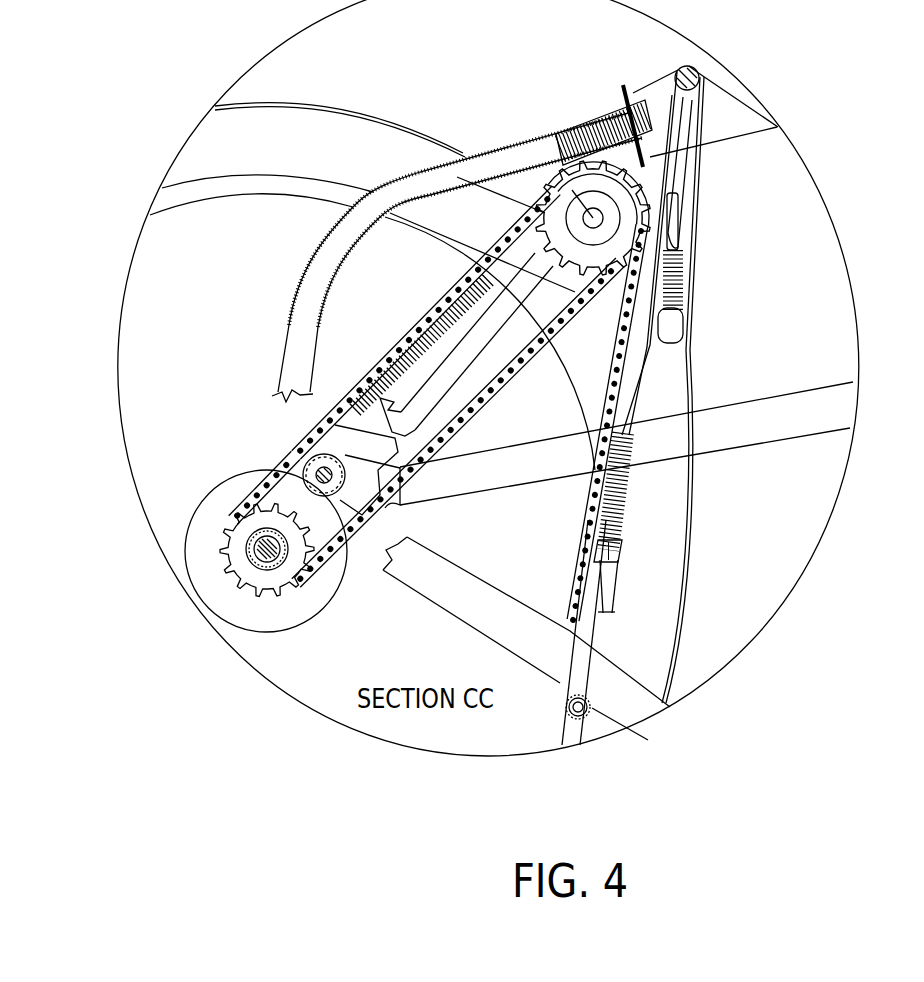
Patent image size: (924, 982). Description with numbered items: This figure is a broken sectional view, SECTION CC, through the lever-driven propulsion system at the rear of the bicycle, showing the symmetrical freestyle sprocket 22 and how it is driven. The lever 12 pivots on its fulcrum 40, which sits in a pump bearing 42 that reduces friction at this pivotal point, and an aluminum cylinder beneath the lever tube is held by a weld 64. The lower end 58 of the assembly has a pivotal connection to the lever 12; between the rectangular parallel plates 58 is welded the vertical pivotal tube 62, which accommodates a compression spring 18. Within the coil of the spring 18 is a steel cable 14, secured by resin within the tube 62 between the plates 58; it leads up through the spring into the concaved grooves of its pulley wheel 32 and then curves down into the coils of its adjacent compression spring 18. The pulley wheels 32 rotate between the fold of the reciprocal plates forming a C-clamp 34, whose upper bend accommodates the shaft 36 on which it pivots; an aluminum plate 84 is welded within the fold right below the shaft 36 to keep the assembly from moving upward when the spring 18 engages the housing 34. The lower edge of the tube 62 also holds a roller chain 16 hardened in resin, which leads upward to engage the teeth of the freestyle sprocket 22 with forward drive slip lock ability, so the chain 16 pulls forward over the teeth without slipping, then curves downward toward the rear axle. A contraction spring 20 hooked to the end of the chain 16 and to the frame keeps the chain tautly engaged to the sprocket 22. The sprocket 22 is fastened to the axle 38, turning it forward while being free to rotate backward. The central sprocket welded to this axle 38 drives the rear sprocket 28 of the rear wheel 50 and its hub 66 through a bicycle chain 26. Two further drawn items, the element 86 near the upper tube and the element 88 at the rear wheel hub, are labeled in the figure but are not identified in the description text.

The lever 12 is at (730, 442).
The steel cable 14 is at (668, 395).
The drive chain 16 is at (590, 420).
The compression spring 18 is at (688, 280).
The contraction spring 20 is at (438, 300).
The freestyle sprocket 22 is at (546, 336).
The bicycle chain 26 is at (405, 342).
The rear sprocket 28 is at (282, 590).
The pulley wheel 32 is at (675, 222).
The C-clamp 34 is at (692, 122).
The shaft 36 is at (695, 62).
The axle 38 is at (548, 153).
The fulcrum 40 is at (335, 430).
The pump bearing 42 is at (305, 470).
The rear wheel 50 is at (276, 146).
The plates 58 is at (683, 328).
The tube 62 is at (624, 548).
The weld 64 is at (591, 718).
The hub 66 is at (238, 607).
The aluminum plate 84 is at (704, 95).
The spring 86 is at (592, 140).
The hub 88 is at (248, 553).